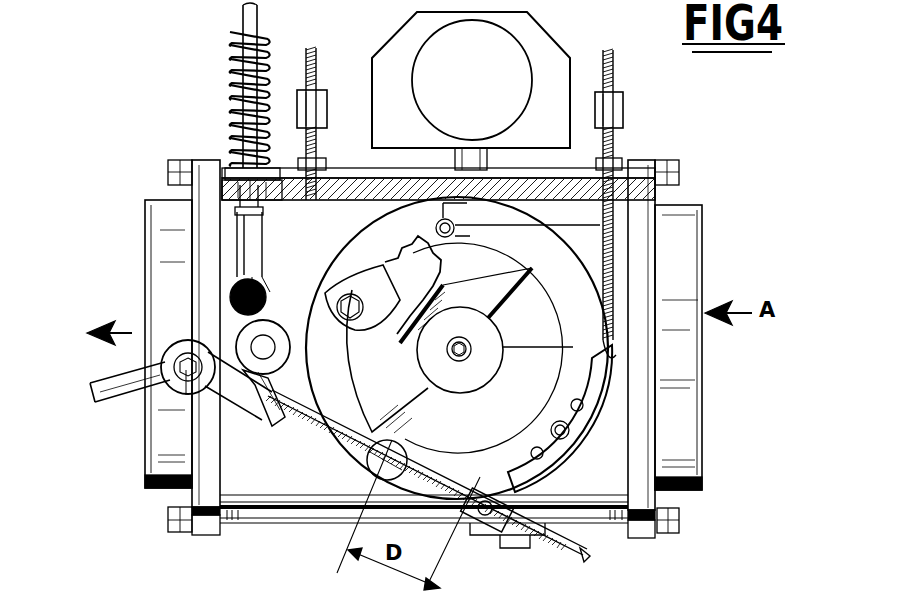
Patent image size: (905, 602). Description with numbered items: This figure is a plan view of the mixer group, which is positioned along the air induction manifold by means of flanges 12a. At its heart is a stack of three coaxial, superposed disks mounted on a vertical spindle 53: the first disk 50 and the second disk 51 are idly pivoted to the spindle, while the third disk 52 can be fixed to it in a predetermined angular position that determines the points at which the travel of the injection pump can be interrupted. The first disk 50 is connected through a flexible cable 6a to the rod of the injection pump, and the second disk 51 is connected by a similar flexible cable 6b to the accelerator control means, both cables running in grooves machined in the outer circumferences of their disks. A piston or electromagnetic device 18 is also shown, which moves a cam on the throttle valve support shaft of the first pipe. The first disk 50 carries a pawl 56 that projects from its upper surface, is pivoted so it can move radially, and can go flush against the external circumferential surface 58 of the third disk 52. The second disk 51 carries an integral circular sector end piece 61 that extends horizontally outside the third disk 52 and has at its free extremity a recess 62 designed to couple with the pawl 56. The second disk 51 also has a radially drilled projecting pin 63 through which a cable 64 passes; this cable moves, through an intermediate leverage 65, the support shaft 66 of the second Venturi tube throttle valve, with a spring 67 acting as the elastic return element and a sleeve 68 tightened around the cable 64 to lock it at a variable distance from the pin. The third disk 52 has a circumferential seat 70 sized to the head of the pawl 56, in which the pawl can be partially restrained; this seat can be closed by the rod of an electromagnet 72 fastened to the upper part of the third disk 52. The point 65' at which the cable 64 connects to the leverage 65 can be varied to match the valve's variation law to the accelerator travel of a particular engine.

The spring 67 is at (248, 57).
The flexible cable 6a is at (308, 62).
The flexible cable 6b is at (614, 75).
The piston or electromagnetic device 18 is at (481, 94).
The seat 70 is at (383, 280).
The electromagnet 72 is at (330, 297).
The support shaft 66 is at (263, 345).
The leverage 65 is at (332, 447).
The connection point 65' is at (133, 424).
The recess 62 is at (456, 232).
The pawl 56 is at (548, 283).
The circular sector end piece 61 is at (583, 382).
The flanges 12a is at (675, 411).
The first disk 50 is at (340, 376).
The third disk 52 is at (402, 392).
The second disk 51 is at (532, 411).
The vertical spindle 53 is at (459, 360).
The external circumferential surface 58 is at (347, 388).
The projecting pin 63 is at (372, 466).
The sleeve 68 is at (490, 518).
The cable 64 is at (579, 558).